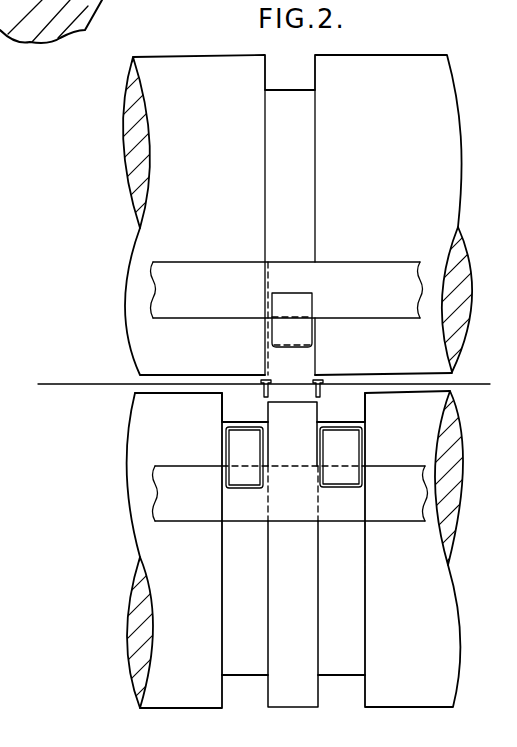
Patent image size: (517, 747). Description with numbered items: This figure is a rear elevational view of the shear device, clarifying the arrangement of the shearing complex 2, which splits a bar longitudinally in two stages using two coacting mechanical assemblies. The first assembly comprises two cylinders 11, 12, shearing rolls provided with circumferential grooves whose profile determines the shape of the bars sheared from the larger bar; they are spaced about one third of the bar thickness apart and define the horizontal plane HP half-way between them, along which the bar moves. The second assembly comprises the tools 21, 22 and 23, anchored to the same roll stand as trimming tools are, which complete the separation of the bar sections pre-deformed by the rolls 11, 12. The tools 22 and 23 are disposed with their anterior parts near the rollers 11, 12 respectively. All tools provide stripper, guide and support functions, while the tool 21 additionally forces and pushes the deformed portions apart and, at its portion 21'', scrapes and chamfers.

The shearing complex 2 is at (72, 341).
The cylinder 11 is at (137, 411).
The cylinder 12 is at (133, 333).
The tool 21 is at (293, 554).
The tool portion 21'' is at (311, 360).
The tool 22 is at (245, 477).
The tool 23 is at (285, 302).